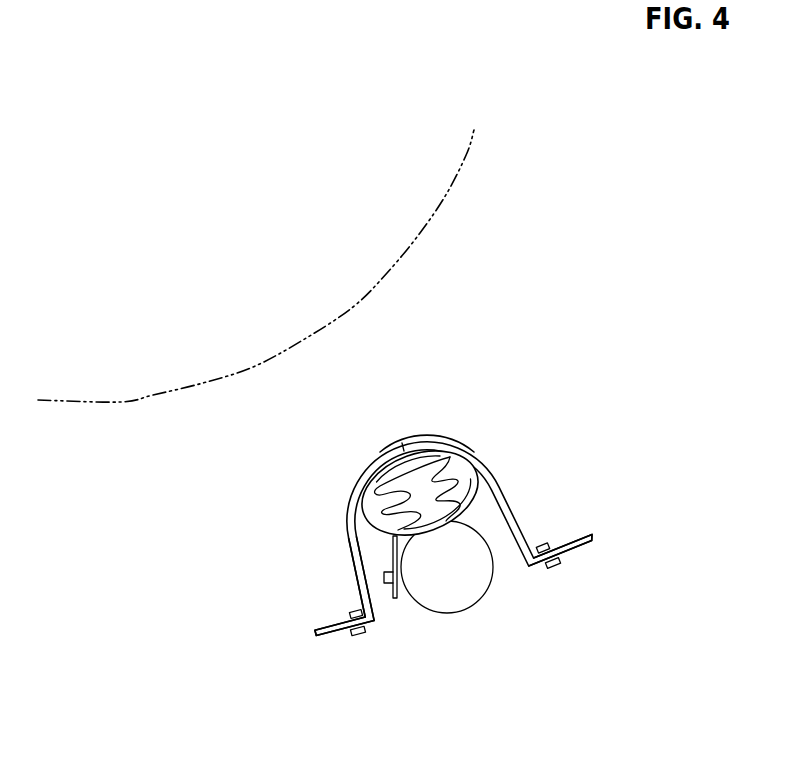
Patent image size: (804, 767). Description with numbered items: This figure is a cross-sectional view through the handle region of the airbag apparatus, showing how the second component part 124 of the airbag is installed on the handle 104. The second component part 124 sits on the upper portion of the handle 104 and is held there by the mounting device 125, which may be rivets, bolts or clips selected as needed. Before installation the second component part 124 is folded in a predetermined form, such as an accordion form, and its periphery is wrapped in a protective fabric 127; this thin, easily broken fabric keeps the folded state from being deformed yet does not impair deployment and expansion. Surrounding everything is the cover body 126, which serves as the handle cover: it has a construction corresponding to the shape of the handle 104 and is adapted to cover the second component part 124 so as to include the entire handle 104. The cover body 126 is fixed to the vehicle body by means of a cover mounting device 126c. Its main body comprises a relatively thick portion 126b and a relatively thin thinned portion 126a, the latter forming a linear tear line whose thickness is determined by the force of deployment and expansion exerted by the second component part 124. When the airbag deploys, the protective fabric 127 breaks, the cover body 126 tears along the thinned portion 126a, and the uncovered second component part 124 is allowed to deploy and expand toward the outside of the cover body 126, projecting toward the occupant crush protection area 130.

The handle 104 is at (495, 572).
The second component part 124 is at (451, 447).
The mounting device 125 is at (397, 612).
The cover body 126 is at (430, 385).
The thinned portion 126a is at (402, 445).
The thick portion 126b is at (348, 501).
The cover mounting device 126c is at (335, 617).
The protective fabric 127 is at (478, 491).
The occupant crush protection area 130 is at (140, 398).